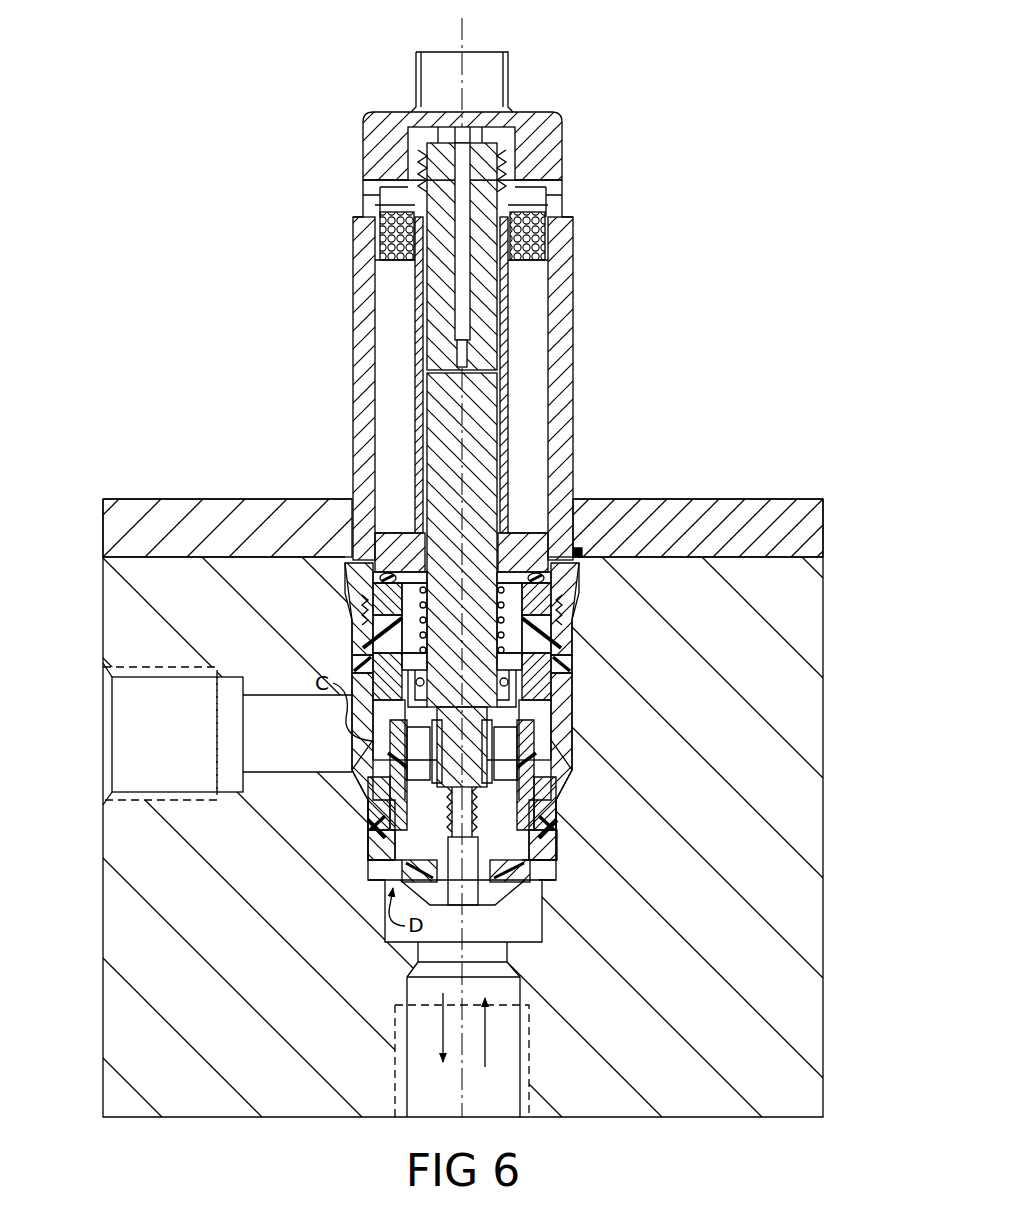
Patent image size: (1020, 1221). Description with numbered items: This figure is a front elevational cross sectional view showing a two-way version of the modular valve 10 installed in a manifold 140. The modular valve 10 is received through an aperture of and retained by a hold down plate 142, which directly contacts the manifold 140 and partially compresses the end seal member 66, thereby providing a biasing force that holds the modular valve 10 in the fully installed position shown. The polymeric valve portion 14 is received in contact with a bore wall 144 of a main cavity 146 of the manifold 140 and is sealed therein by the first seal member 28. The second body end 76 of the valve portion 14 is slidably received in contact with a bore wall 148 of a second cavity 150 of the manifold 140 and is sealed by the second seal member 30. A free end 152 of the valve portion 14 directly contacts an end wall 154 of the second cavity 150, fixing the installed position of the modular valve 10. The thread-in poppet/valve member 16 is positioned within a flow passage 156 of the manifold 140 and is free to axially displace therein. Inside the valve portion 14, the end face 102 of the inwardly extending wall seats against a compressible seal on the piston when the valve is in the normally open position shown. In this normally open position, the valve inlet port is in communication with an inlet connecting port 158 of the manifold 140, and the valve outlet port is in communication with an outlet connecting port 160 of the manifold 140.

The modular valve 10 is at (648, 258).
The valve portion 14 is at (570, 692).
The thread-in poppet/valve member 16 is at (516, 906).
The first seal member 28 is at (572, 660).
The second seal member 30 is at (368, 840).
The end seal member 66 is at (580, 556).
The second body end 76 is at (376, 872).
The end face 102 is at (808, 968).
The manifold 140 is at (122, 931).
The hold down plate 142 is at (118, 526).
The bore wall 144 is at (588, 749).
The main cavity 146 is at (560, 722).
The bore wall 148 is at (356, 813).
The second cavity 150 is at (565, 795).
The free end 152 is at (368, 892).
The end wall 154 is at (552, 856).
The flow passage 156 is at (522, 928).
The inlet connecting port 158 is at (120, 727).
The outlet connecting port 160 is at (487, 1090).